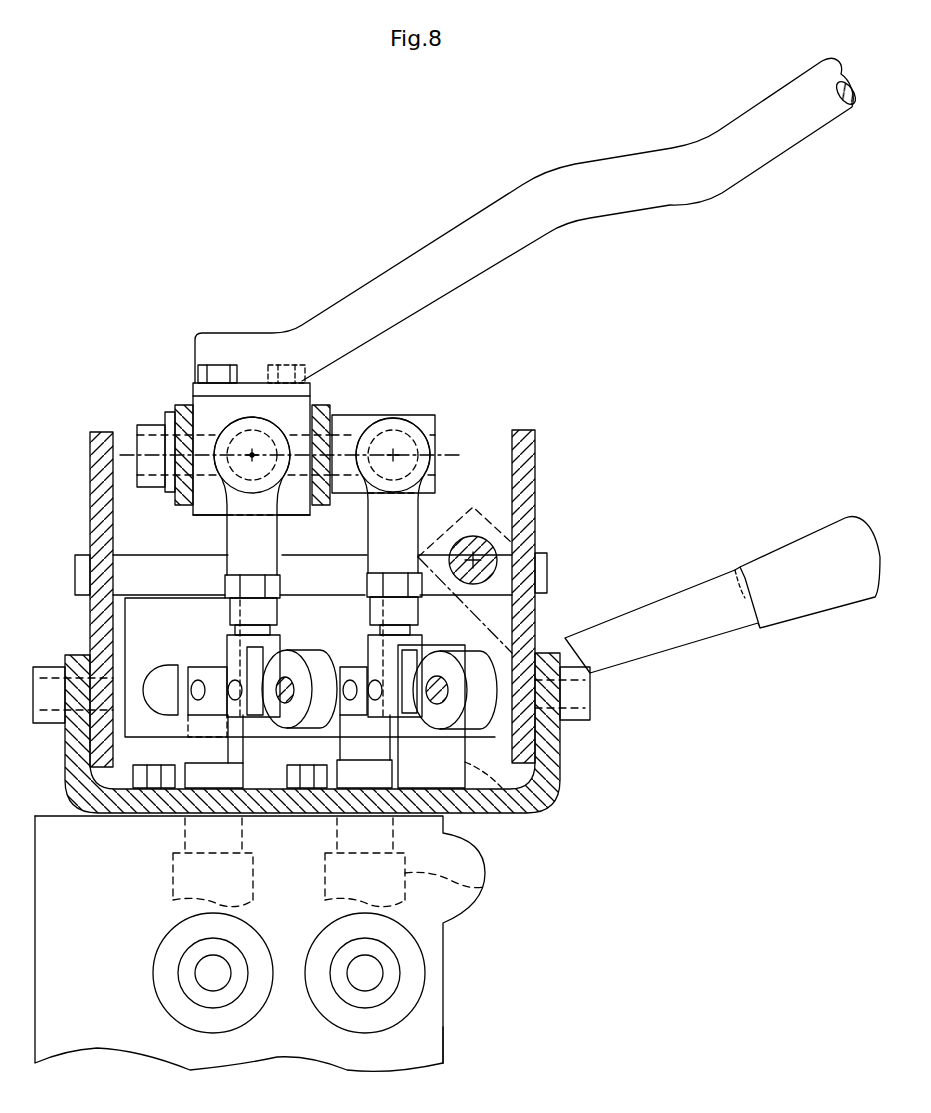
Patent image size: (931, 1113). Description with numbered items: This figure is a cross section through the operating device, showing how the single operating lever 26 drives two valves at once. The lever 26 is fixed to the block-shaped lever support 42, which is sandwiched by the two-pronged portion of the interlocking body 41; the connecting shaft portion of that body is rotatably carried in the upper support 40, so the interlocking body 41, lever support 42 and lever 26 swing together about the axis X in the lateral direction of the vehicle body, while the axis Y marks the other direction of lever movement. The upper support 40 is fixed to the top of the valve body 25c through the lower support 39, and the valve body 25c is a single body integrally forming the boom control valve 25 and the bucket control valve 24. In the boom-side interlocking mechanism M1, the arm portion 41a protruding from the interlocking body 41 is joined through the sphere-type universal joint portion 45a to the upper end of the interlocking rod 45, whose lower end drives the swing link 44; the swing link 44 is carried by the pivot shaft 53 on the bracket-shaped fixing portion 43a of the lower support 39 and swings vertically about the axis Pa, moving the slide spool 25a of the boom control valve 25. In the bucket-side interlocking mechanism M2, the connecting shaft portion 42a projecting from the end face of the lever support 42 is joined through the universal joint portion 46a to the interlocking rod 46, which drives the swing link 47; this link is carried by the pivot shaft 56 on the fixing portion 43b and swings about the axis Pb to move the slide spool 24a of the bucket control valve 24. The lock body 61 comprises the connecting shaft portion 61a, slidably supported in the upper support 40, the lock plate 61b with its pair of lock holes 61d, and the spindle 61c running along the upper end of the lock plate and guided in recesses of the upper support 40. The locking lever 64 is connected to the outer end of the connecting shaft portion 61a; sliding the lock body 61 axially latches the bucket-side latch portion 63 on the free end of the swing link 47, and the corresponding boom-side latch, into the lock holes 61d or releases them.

The operating lever 26 is at (625, 163).
The lever support 42 is at (232, 400).
The bucket-side interlocking mechanism M2 is at (259, 404).
The axis Y is at (130, 455).
The universal joint portion 46a is at (227, 427).
The interlocking body 41 is at (335, 398).
The arm portion 41a is at (423, 417).
The boom-side interlocking mechanism M1 is at (452, 418).
The universal joint portion 45a is at (423, 442).
The upper support 40 is at (537, 470).
The locking lever 64 is at (787, 547).
The axis X is at (252, 455).
The lock body 61 is at (120, 553).
The interlocking rod 46 is at (217, 542).
The connecting shaft portion 42a is at (257, 480).
The interlocking rod 45 is at (430, 503).
The spindle 61c is at (83, 556).
The connecting shaft portion 61a is at (605, 627).
The swing link 47 is at (212, 663).
The swing link 44 is at (353, 653).
The lock plate 61b is at (130, 640).
The bucket-side latch portion 63 is at (173, 680).
The lower support 39 is at (562, 747).
The axis Pa is at (425, 694).
The pivot shaft 53 is at (447, 717).
The axis Pb is at (285, 694).
The pivot shaft 56 is at (255, 775).
The lock hole 61d is at (165, 717).
The fixing portion 43a is at (503, 790).
The fixing portion 43b is at (360, 817).
The slide spool 24a is at (173, 873).
The bucket control valve 24 is at (247, 953).
The slide spool 25a is at (483, 887).
The boom control valve 25 is at (309, 943).
The valve body 25c is at (438, 1027).